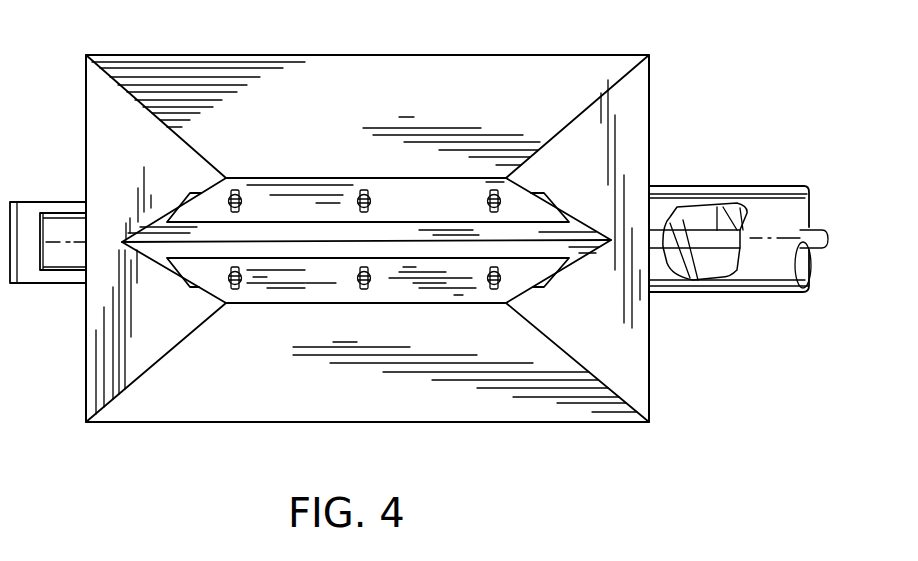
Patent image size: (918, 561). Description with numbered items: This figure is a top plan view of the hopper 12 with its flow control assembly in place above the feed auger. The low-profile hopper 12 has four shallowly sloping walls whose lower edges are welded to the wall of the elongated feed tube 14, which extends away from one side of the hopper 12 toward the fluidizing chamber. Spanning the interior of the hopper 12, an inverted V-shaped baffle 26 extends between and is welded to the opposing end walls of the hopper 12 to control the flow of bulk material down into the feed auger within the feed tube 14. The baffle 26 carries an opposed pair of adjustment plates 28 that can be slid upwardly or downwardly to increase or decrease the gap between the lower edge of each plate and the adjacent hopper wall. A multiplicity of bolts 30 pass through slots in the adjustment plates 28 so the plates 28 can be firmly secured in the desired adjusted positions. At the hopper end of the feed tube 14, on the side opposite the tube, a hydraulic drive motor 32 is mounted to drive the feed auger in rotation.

The hopper 12 is at (262, 54).
The feed tube 14 is at (746, 186).
The inverted V-shaped baffle 26 is at (393, 237).
The adjustment plates 28 is at (451, 200).
The bolts 30 is at (233, 290).
The hydraulic drive motor 32 is at (80, 203).